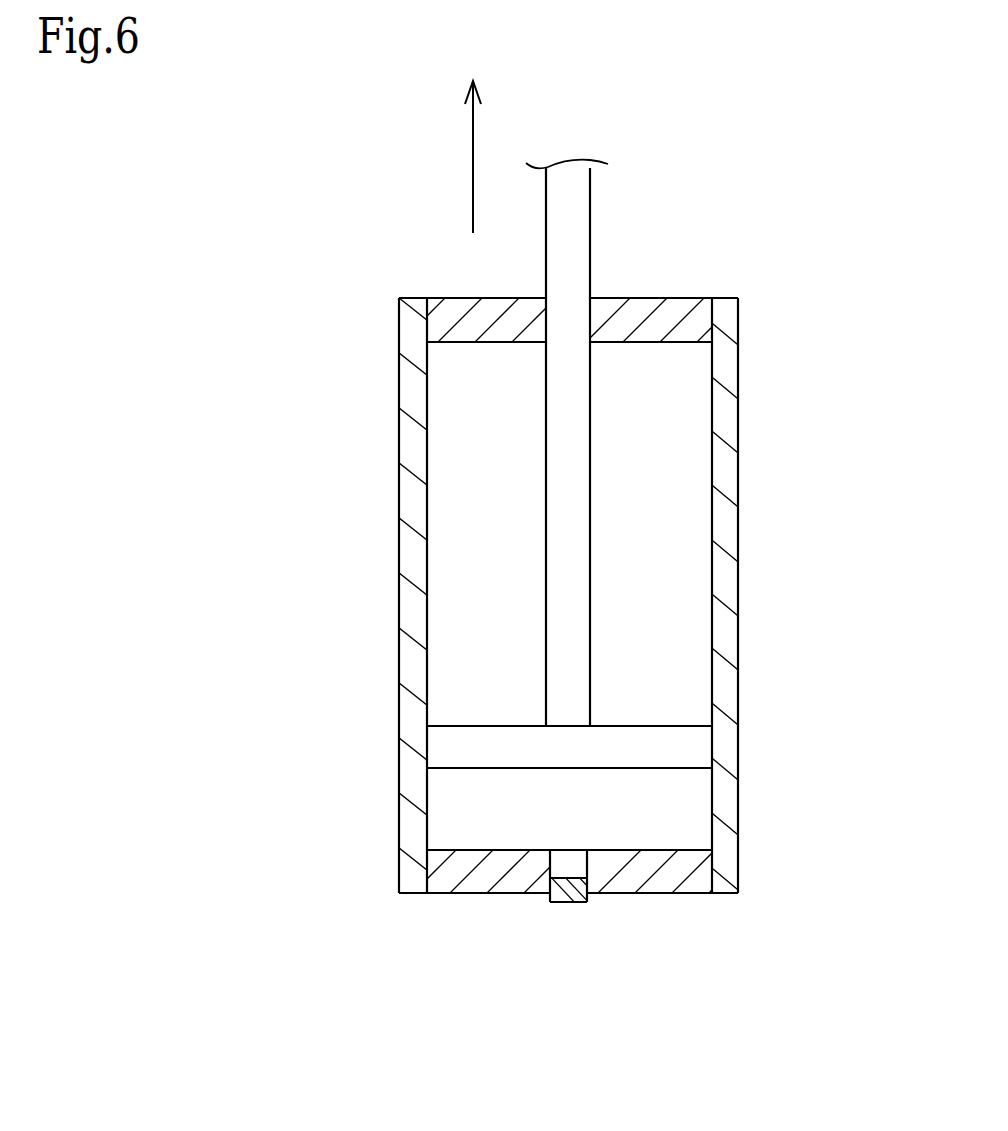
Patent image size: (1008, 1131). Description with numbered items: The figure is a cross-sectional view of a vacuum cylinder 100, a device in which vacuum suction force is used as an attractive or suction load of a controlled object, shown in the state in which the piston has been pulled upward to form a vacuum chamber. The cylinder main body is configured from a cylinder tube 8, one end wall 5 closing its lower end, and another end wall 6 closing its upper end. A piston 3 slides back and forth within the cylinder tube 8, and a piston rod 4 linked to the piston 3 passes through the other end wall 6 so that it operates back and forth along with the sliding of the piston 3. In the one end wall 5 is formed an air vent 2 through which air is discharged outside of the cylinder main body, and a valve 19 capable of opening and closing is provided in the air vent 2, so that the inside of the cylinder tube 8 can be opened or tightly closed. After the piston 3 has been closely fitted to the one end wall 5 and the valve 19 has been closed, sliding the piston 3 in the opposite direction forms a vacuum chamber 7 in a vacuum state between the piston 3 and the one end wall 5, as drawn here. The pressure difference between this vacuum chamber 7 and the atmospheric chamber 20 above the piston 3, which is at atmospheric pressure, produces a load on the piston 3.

The vacuum cylinder 100 is at (767, 335).
The piston rod 4 is at (568, 229).
The other end wall 6 is at (683, 298).
The cylinder tube 8 is at (723, 533).
The atmospheric chamber 20 is at (518, 567).
The piston 3 is at (692, 743).
The vacuum chamber 7 is at (470, 805).
The one end wall 5 is at (642, 880).
The air vent 2 is at (565, 863).
The valve 19 is at (570, 902).